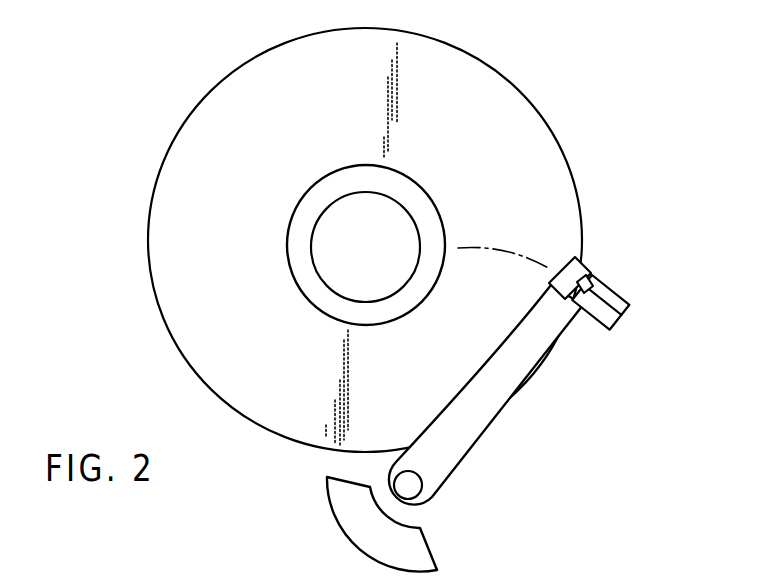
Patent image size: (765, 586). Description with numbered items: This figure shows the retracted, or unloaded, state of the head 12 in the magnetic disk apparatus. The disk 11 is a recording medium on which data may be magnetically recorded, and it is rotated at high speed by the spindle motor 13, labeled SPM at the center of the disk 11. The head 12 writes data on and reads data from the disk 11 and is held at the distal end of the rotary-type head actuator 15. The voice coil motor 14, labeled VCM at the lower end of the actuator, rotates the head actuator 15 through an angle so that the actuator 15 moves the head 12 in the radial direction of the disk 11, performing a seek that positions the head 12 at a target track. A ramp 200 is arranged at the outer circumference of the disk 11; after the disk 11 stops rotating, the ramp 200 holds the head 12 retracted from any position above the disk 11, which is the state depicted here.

The disk 11 is at (208, 140).
The head 12 is at (593, 274).
The spindle motor 13 is at (322, 245).
The voice coil motor 14 is at (437, 550).
The head actuator 15 is at (480, 450).
The ramp 200 is at (588, 333).